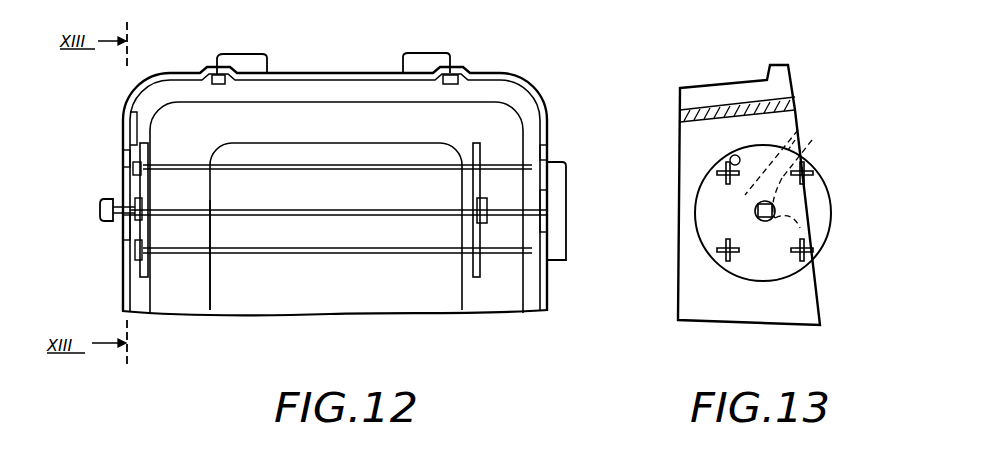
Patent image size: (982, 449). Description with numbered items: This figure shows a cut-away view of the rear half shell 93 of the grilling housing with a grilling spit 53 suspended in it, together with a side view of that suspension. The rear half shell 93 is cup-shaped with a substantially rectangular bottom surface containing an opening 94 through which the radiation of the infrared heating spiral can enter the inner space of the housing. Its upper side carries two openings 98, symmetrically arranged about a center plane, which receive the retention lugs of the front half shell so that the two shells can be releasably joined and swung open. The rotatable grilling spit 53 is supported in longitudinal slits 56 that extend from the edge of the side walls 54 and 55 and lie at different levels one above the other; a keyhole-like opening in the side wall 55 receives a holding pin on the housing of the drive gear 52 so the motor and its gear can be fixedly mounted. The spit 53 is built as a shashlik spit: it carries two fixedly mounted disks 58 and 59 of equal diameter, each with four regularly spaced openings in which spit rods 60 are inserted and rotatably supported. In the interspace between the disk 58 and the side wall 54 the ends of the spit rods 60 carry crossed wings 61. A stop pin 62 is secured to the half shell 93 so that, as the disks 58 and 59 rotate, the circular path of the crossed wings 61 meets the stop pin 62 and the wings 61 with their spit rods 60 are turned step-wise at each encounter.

In FIG. 12, the drive gear 52 is at (567, 198).
In FIG. 12, the grilling spit 53 is at (334, 208).
In FIG. 13, the grilling spit 53 is at (766, 222).
In FIG. 12, the side wall 54 is at (127, 242).
In FIG. 12, the side wall 55 is at (548, 299).
In FIG. 13, the side wall 55 is at (808, 307).
In FIG. 12, the longitudinal slits 56 is at (122, 154).
In FIG. 13, the longitudinal slits 56 is at (796, 146).
In FIG. 12, the disk 58 is at (148, 148).
In FIG. 13, the disk 58 is at (823, 194).
In FIG. 12, the disk 59 is at (474, 144).
In FIG. 12, the spit rods 60 is at (354, 168).
In FIG. 12, the crossed wings 61 is at (141, 172).
In FIG. 13, the crossed wings 61 is at (722, 176).
In FIG. 12, the stop pin 62 is at (134, 112).
In FIG. 13, the stop pin 62 is at (760, 131).
In FIG. 12, the rear half shell 93 is at (515, 101).
In FIG. 12, the opening 94 is at (211, 297).
In FIG. 12, the openings 98 is at (219, 75).